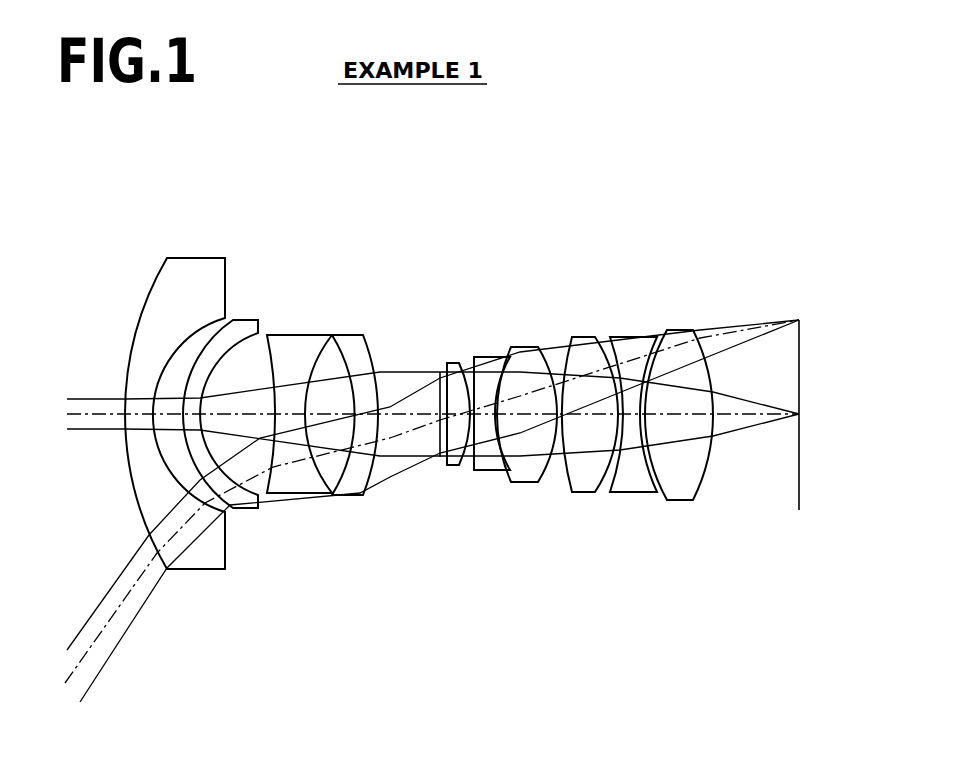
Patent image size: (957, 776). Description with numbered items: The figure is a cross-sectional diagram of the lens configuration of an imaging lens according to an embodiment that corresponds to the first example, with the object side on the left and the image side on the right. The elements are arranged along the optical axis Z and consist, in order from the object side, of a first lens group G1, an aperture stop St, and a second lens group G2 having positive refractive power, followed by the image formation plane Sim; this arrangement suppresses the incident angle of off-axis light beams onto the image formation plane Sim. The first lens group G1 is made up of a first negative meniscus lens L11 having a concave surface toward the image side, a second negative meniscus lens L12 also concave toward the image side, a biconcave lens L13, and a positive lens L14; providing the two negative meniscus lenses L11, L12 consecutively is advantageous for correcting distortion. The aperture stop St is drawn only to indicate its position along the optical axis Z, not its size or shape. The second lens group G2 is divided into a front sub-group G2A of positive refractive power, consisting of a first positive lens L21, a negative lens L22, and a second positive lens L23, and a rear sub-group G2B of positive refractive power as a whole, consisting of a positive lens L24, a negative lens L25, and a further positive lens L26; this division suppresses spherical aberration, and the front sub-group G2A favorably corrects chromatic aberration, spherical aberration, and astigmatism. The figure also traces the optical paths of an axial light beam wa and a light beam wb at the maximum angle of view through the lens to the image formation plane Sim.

The optical axis Z is at (89, 412).
The axial light beam wa is at (64, 393).
The light beam at maximum angle of view wb is at (64, 643).
The first lens group G1 is at (352, 163).
The 1-1 negative meniscus lens L11 is at (192, 268).
The 1-2 negative meniscus lens L12 is at (238, 330).
The 1-3 biconcave lens L13 is at (295, 340).
The 1-4 positive lens L14 is at (345, 345).
The aperture stop St is at (450, 462).
The second lens group G2 is at (672, 202).
The 2A lens group G2A is at (548, 240).
The 2B lens group G2B is at (698, 240).
The 2A-1 positive lens L21 is at (455, 372).
The 2A-2 negative lens L22 is at (490, 368).
The 2A-3 positive lens L23 is at (527, 358).
The 2B-1 positive lens L24 is at (583, 345).
The 2B-2 negative lens L25 is at (635, 350).
The 2B-3 positive lens L26 is at (673, 345).
The image formation plane Sim is at (800, 512).